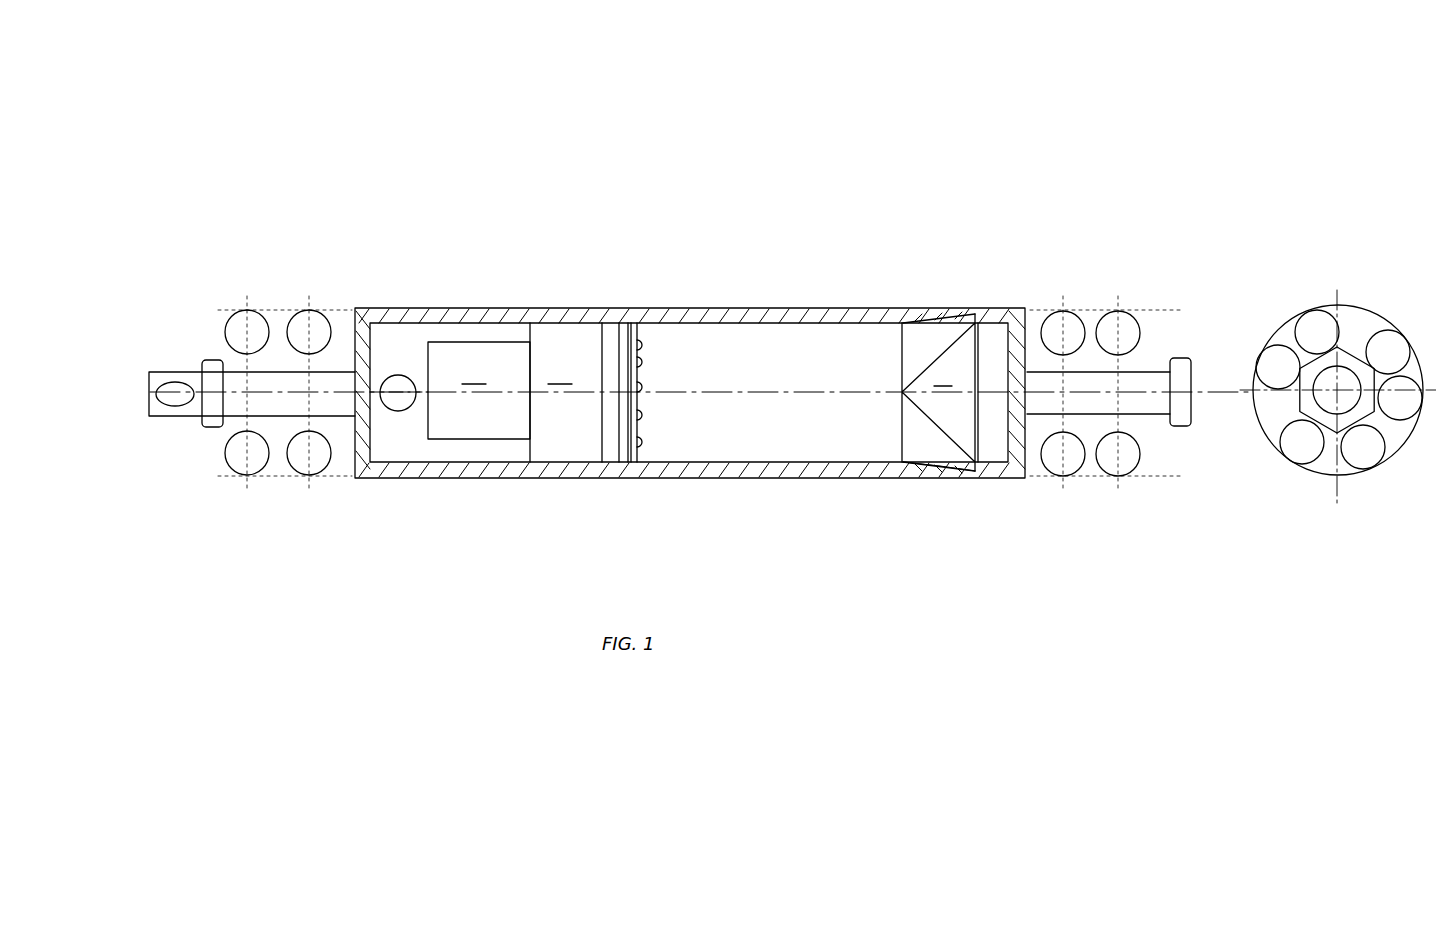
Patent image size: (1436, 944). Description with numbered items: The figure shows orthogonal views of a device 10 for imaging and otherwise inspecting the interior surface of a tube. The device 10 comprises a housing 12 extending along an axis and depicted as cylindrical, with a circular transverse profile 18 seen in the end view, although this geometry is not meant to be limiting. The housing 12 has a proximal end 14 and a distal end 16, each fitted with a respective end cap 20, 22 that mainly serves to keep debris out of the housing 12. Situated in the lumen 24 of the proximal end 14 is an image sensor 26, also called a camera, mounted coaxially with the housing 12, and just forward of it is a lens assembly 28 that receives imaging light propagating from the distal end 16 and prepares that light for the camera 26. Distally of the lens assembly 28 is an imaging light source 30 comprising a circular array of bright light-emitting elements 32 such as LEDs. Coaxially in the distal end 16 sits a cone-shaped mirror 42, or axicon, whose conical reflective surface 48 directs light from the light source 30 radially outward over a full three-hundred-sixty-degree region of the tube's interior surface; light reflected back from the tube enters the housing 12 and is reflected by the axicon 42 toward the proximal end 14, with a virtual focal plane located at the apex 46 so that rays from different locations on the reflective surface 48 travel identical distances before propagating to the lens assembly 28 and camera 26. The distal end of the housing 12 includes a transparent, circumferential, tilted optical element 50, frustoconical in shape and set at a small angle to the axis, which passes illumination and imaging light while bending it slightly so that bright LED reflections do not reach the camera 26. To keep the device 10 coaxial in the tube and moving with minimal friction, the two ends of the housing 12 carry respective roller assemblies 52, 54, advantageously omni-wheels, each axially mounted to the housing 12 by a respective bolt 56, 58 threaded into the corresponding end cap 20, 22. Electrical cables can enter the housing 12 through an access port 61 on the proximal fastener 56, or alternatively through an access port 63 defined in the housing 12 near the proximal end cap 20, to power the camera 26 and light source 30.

The device 10 is at (1006, 90).
The housing 12 is at (494, 318).
The proximal end 14 is at (383, 230).
The distal end 16 is at (956, 251).
The circular transverse profile 18 is at (1312, 475).
The end cap 20 is at (361, 443).
The end cap 22 is at (1010, 445).
The lumen 24 is at (418, 445).
The image sensor 26 is at (479, 390).
The lens assembly 28 is at (566, 392).
The imaging light source 30 is at (627, 320).
The light-emitting elements 32 is at (652, 358).
The cone-shaped mirror 42 is at (940, 392).
The apex 46 is at (902, 392).
The conical reflective surface 48 is at (927, 418).
The tilted optical element 50 is at (940, 473).
The roller assembly 52 is at (283, 462).
The roller assembly 54 is at (1093, 471).
The bolt 56 is at (212, 409).
The bolt 58 is at (1133, 405).
The access port 61 is at (168, 375).
The access port 63 is at (397, 375).